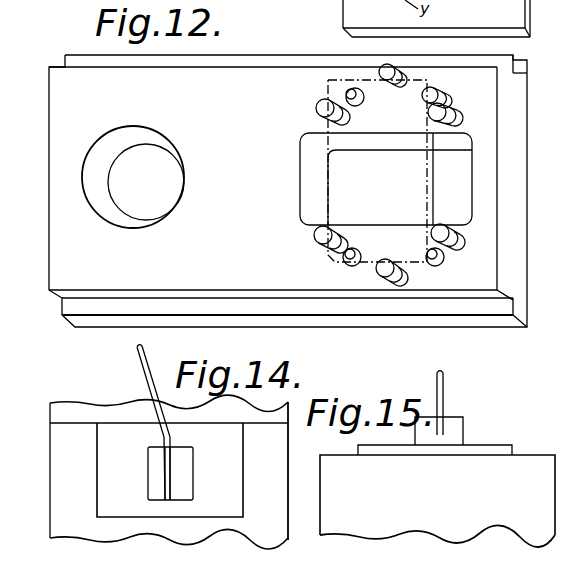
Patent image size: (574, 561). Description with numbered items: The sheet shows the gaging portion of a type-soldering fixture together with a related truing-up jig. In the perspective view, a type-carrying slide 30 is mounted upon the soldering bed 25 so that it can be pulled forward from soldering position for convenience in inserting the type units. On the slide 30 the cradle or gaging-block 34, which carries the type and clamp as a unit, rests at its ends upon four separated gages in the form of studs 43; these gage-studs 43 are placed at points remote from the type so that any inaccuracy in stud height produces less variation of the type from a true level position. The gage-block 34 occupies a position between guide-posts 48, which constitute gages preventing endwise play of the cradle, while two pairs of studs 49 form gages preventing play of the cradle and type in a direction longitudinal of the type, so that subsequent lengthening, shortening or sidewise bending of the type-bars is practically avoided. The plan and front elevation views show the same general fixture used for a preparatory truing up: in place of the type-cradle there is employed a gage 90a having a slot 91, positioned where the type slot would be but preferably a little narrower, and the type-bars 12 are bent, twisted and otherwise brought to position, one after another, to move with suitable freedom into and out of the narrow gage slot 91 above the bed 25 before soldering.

In FIG. 14, the type-bar 12 is at (142, 370).
In FIG. 15, the type-bar 12 is at (444, 393).
In FIG. 14, the soldering bed 25 is at (169, 472).
In FIG. 15, the soldering bed 25 is at (437, 501).
In FIG. 12, the type-carrying slide 30 is at (288, 191).
In FIG. 12, the cradle or gaging-block 34 is at (328, 126).
In FIG. 12, the gage-studs 43 is at (422, 99).
In FIG. 12, the guide-posts 48 is at (389, 70).
In FIG. 12, the studs 49 is at (430, 111).
In FIG. 14, the gage 90a is at (194, 478).
In FIG. 15, the gage 90a is at (490, 437).
In FIG. 14, the slot 91 is at (165, 473).
In FIG. 15, the slot 91 is at (464, 425).